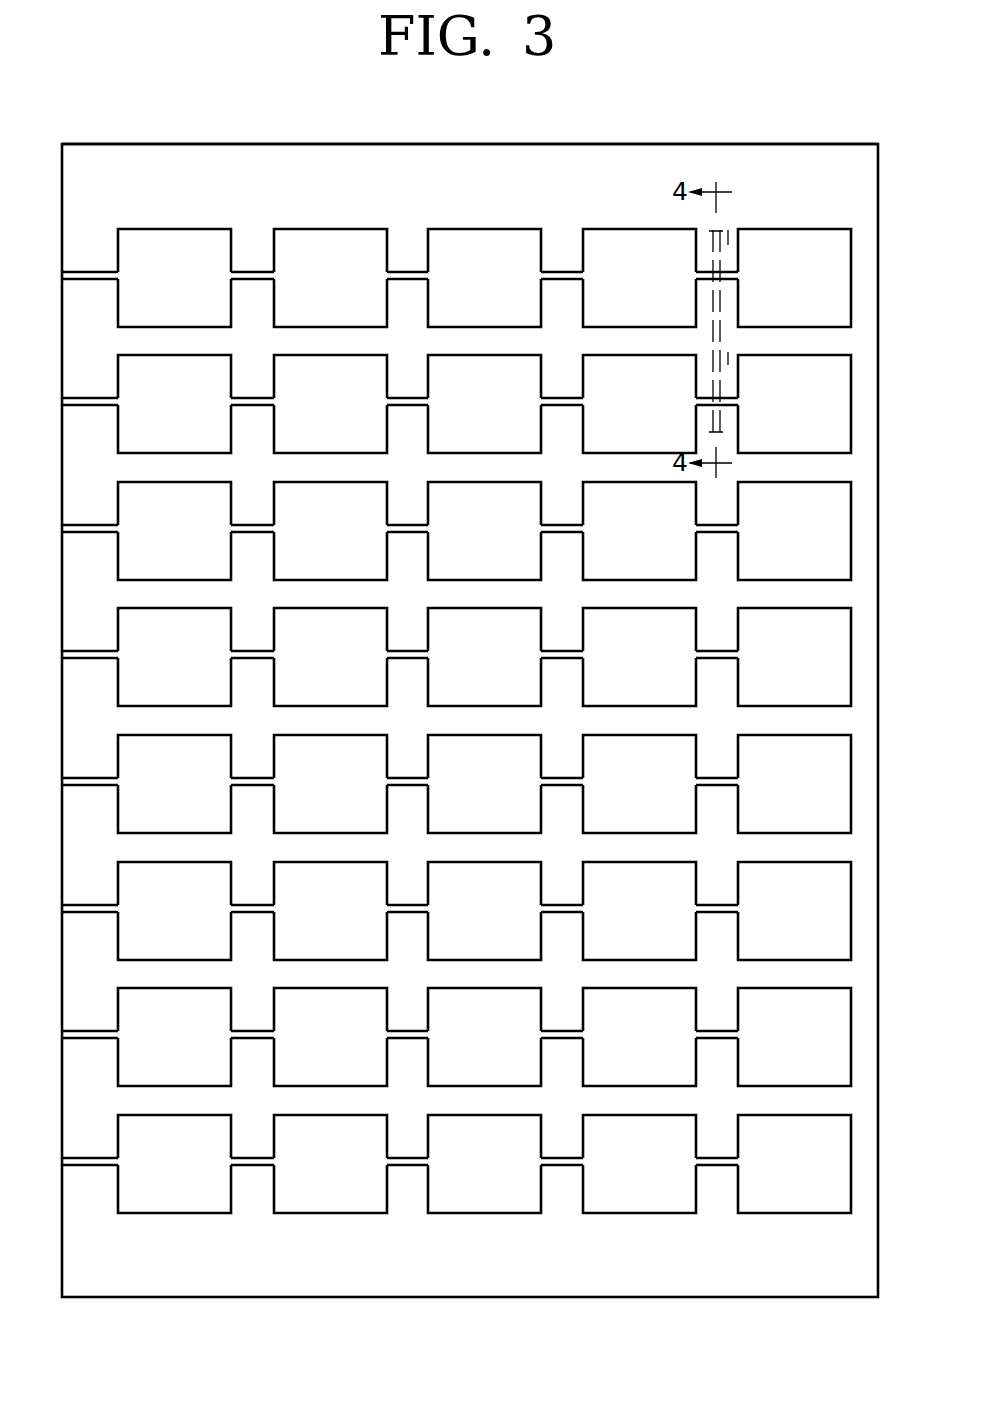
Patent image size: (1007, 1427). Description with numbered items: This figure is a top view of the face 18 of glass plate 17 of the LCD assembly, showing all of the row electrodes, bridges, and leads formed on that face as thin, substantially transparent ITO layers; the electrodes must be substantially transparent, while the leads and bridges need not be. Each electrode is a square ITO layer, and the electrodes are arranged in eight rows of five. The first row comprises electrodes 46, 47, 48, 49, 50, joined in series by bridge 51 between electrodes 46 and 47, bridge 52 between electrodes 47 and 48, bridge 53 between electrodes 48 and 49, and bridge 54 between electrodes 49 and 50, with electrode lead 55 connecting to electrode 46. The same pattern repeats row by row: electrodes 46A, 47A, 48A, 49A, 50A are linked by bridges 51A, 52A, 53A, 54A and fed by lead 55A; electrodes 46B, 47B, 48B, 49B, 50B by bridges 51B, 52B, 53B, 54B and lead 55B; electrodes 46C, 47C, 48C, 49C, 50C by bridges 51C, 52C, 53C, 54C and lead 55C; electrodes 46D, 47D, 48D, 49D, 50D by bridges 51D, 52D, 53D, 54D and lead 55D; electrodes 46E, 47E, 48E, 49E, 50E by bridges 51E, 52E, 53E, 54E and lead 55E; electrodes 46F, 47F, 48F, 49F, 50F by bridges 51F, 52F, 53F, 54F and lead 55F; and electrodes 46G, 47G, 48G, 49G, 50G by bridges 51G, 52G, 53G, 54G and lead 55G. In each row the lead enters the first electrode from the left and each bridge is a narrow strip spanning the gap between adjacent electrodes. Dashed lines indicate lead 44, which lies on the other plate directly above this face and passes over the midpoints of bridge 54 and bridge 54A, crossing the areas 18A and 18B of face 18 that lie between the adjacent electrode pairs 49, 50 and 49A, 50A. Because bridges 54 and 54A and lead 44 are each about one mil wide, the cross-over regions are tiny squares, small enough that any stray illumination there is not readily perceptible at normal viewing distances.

The glass plate 17 is at (232, 130).
The face 18 is at (618, 155).
The area of face 18 18A is at (728, 230).
The area of face 18 18B is at (728, 352).
The lead 44 is at (708, 318).
The electrode 46 is at (188, 315).
The electrode 47 is at (343, 315).
The electrode 48 is at (497, 315).
The electrode 49 is at (652, 315).
The electrode 50 is at (807, 315).
The bridge 51 is at (241, 272).
The bridge 52 is at (395, 272).
The bridge 53 is at (550, 272).
The bridge 54 is at (705, 272).
The electrode lead 55 is at (85, 272).
The electrode 46A is at (192, 441).
The electrode 47A is at (348, 441).
The electrode 48A is at (502, 441).
The electrode 49A is at (657, 441).
The electrode 50A is at (812, 441).
The bridge 51A is at (241, 398).
The bridge 52A is at (395, 398).
The bridge 53A is at (550, 398).
The bridge 54A is at (705, 398).
The lead 55A is at (85, 398).
The electrode 46B is at (192, 568).
The electrode 47B is at (348, 568).
The electrode 48B is at (502, 568).
The electrode 49B is at (657, 568).
The electrode 50B is at (812, 568).
The bridge 51B is at (241, 525).
The bridge 52B is at (395, 525).
The bridge 53B is at (550, 525).
The bridge 54B is at (705, 525).
The lead 55B is at (85, 525).
The electrode 46C is at (192, 694).
The electrode 47C is at (348, 694).
The electrode 48C is at (502, 694).
The electrode 49C is at (657, 694).
The electrode 50C is at (812, 694).
The bridge 51C is at (241, 651).
The bridge 52C is at (395, 651).
The bridge 53C is at (550, 651).
The bridge 54C is at (705, 651).
The lead 55C is at (85, 651).
The electrode 46D is at (192, 821).
The electrode 47D is at (348, 821).
The electrode 48D is at (502, 821).
The electrode 49D is at (657, 821).
The electrode 50D is at (812, 821).
The bridge 51D is at (241, 778).
The bridge 52D is at (395, 778).
The bridge 53D is at (550, 778).
The bridge 54D is at (705, 778).
The lead 55D is at (85, 778).
The electrode 46E is at (192, 948).
The electrode 47E is at (348, 948).
The electrode 48E is at (502, 948).
The electrode 49E is at (657, 948).
The electrode 50E is at (812, 948).
The bridge 51E is at (241, 905).
The bridge 52E is at (395, 905).
The bridge 53E is at (550, 905).
The bridge 54E is at (705, 905).
The lead 55E is at (85, 905).
The electrode 46F is at (192, 1074).
The electrode 47F is at (348, 1074).
The electrode 48F is at (502, 1074).
The electrode 49F is at (657, 1074).
The electrode 50F is at (812, 1074).
The bridge 51F is at (241, 1031).
The bridge 52F is at (395, 1031).
The bridge 53F is at (550, 1031).
The bridge 54F is at (705, 1031).
The lead 55F is at (85, 1031).
The electrode 46G is at (192, 1201).
The electrode 47G is at (348, 1201).
The electrode 48G is at (502, 1201).
The electrode 49G is at (657, 1201).
The electrode 50G is at (812, 1201).
The bridge 51G is at (241, 1158).
The bridge 52G is at (395, 1158).
The bridge 53G is at (550, 1158).
The bridge 54G is at (705, 1158).
The lead 55G is at (85, 1158).